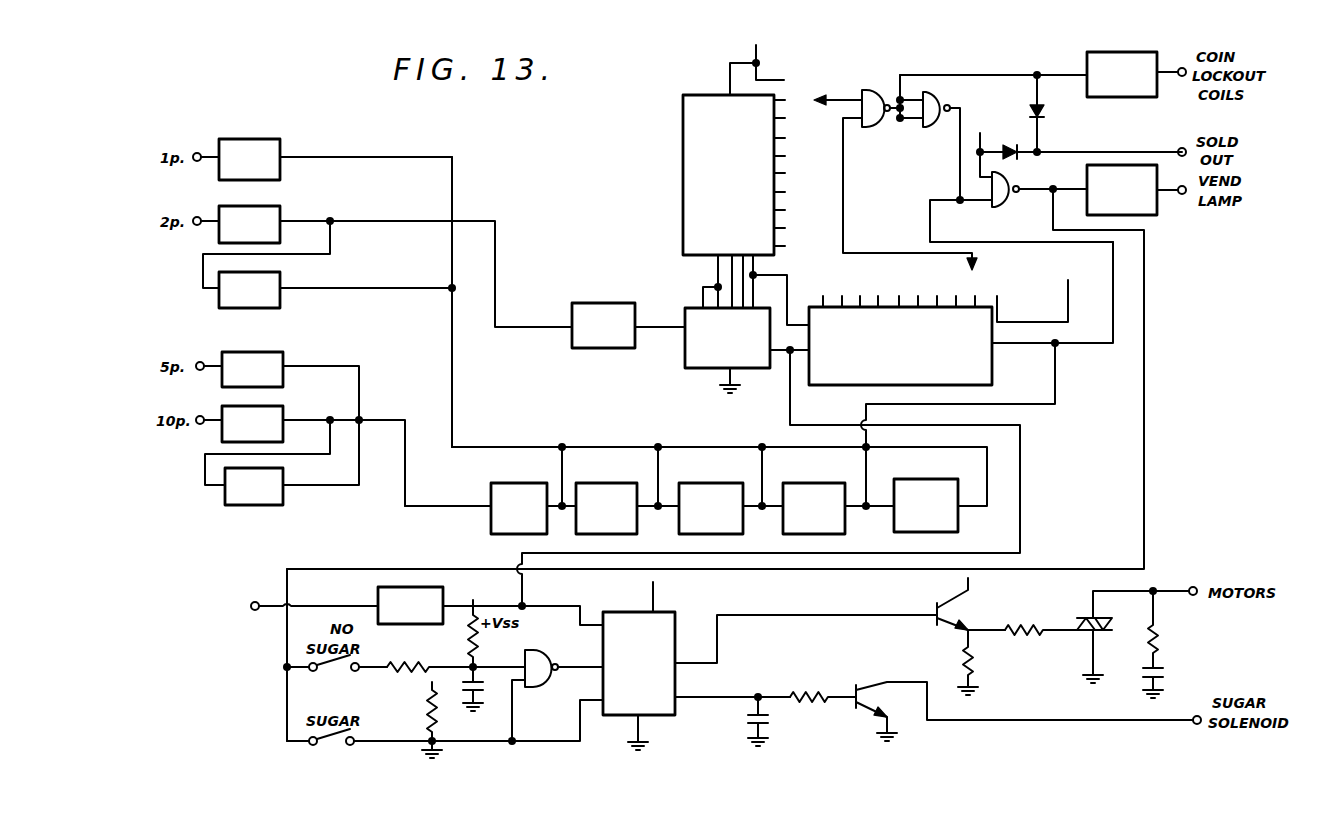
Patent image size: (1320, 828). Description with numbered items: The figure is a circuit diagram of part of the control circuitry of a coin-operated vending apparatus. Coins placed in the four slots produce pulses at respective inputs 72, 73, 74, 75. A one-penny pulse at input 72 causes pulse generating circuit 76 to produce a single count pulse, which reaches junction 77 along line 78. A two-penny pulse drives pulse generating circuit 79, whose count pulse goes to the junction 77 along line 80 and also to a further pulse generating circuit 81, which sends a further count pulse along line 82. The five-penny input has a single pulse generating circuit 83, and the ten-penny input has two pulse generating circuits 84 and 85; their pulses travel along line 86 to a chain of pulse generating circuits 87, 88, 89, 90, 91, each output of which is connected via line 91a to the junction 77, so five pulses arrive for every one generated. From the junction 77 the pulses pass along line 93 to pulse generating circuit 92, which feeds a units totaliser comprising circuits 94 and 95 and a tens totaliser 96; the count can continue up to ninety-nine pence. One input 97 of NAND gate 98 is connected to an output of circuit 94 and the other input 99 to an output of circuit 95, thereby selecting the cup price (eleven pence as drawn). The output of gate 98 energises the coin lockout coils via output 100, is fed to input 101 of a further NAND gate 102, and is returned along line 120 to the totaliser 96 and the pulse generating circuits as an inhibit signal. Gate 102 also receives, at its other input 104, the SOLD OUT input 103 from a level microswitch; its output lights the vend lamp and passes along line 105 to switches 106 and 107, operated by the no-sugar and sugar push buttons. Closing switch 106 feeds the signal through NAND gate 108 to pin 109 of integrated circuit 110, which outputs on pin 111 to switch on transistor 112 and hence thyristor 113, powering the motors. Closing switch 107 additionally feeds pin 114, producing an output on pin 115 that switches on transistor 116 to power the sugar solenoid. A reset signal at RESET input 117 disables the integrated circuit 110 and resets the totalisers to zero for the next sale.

The input 72 is at (198, 152).
The input 73 is at (198, 216).
The input 74 is at (200, 361).
The input 75 is at (200, 415).
The pulse generating circuit 76 is at (260, 146).
The junction 77 is at (455, 220).
The line 78 is at (416, 158).
The pulse generating circuit 79 is at (258, 212).
The line 80 is at (418, 223).
The pulse generating circuit 81 is at (270, 280).
The line 82 is at (420, 290).
The pulse generating circuit 83 is at (272, 358).
The pulse generating circuit 84 is at (272, 412).
The pulse generating circuit 85 is at (272, 476).
The line 86 is at (412, 508).
The pulse generating circuit 87 is at (526, 486).
The pulse generating circuit 88 is at (614, 486).
The pulse generating circuit 89 is at (714, 486).
The pulse generating circuit 90 is at (818, 486).
The pulse generating circuit 91 is at (932, 486).
The line 91a is at (455, 388).
The pulse generating circuit 92 is at (598, 305).
The line 93 is at (540, 326).
The circuit 94 is at (690, 312).
The circuit 95 is at (683, 193).
The tens totaliser 96 is at (833, 385).
The input 97 is at (866, 96).
The NAND gate 98 is at (878, 92).
The input 99 is at (860, 124).
The output 100 is at (1180, 68).
The input 101 is at (985, 208).
The NAND gate 102 is at (1002, 208).
The SOLD OUT input 103 is at (1180, 148).
The input 104 is at (975, 176).
The line 105 is at (1146, 394).
The switch 106 is at (340, 668).
The switch 107 is at (340, 742).
The NAND gate 108 is at (531, 686).
The pin 109 is at (601, 660).
The integrated circuit 110 is at (618, 622).
The pin 111 is at (700, 652).
The transistor 112 is at (932, 620).
The thyristor 113 is at (1084, 616).
The pin 114 is at (601, 705).
The pin 115 is at (680, 698).
The transistor 116 is at (852, 692).
The RESET input 117 is at (262, 602).
The line 120 is at (1066, 346).